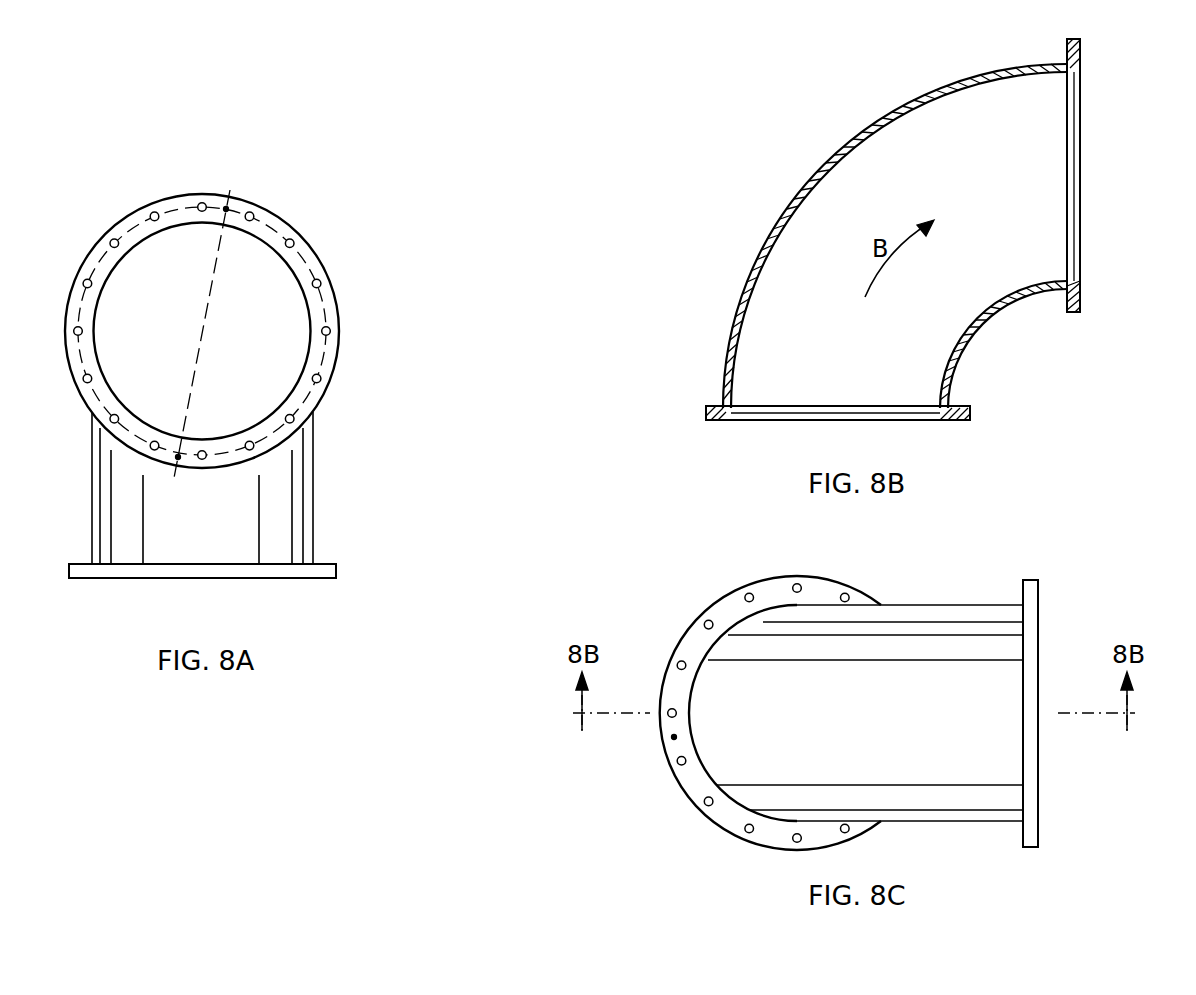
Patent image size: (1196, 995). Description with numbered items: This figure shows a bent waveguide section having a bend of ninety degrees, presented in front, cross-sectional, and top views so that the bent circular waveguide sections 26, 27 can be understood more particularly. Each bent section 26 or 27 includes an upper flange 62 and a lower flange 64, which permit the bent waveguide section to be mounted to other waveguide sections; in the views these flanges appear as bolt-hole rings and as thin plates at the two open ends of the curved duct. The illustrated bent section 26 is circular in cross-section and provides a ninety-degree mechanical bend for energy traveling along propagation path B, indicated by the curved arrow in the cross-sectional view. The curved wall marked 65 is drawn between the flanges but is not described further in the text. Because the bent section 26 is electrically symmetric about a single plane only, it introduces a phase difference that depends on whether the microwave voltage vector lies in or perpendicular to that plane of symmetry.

In FIG. 8B, the bent circular waveguide section 26 is at (895, 218).
In FIG. 8B, the bent circular waveguide section 27 is at (941, 84).
In FIG. 8A, the upper flange 62 is at (312, 248).
In FIG. 8B, the upper flange 62 is at (1073, 167).
In FIG. 8C, the upper flange 62 is at (1032, 610).
In FIG. 8A, the lower flange 64 is at (295, 573).
In FIG. 8B, the lower flange 64 is at (917, 420).
In FIG. 8C, the lower flange 64 is at (712, 830).
In FIG. 8B, the elbow wall 65 is at (895, 218).